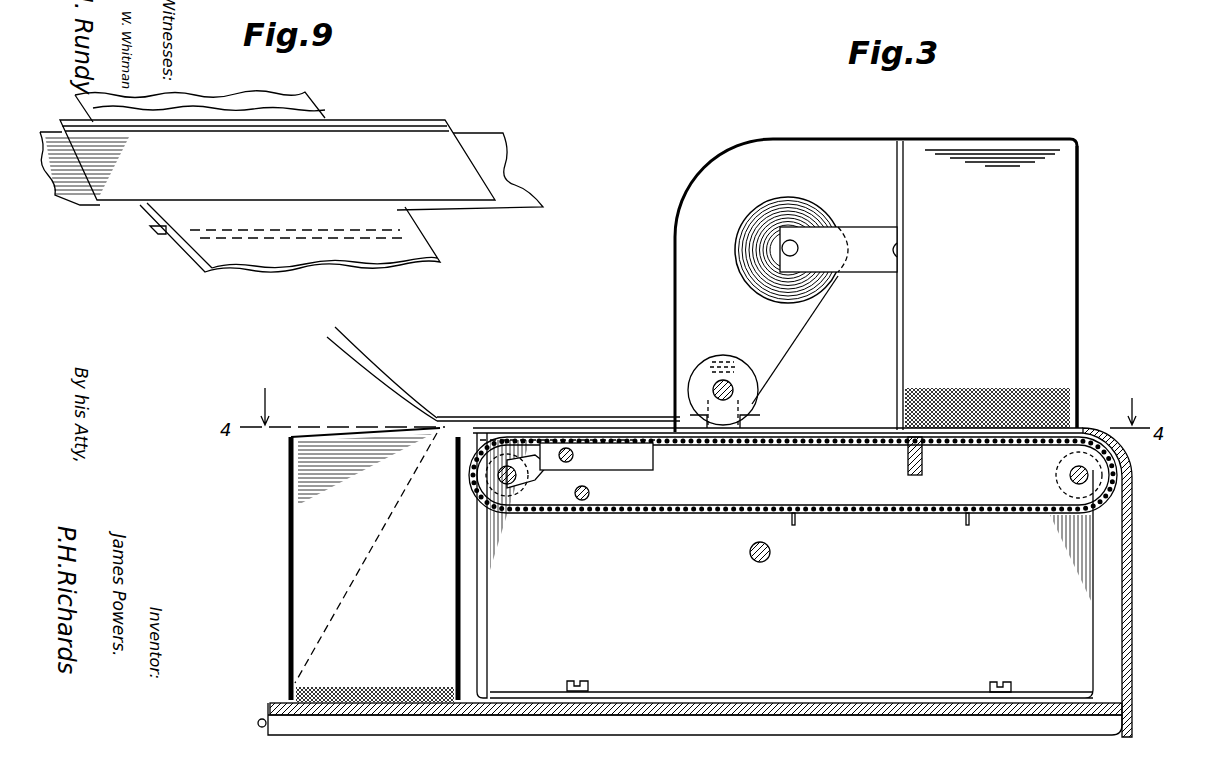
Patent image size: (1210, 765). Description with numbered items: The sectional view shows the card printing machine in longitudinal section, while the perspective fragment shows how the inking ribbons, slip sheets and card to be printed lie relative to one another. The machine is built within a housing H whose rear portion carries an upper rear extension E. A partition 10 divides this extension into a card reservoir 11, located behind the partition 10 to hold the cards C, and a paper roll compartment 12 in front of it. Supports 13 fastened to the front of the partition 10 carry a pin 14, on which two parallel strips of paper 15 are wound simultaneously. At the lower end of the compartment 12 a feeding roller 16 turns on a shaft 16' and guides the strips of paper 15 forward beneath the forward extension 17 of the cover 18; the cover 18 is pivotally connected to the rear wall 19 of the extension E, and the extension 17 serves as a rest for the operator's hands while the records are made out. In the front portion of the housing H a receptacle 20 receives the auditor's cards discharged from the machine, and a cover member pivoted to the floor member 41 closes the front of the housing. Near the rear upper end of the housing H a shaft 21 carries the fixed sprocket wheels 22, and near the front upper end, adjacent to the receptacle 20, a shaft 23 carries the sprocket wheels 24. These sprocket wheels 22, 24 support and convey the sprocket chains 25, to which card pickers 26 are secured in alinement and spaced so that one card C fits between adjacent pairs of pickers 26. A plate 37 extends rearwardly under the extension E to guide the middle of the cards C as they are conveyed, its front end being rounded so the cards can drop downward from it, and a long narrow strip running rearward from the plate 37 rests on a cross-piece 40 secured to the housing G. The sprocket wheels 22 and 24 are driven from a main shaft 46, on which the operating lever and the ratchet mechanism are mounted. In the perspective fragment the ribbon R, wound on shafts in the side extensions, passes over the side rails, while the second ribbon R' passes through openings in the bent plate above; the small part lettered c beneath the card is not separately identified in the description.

In FIG. 3, the partition 10 is at (904, 342).
In FIG. 3, the card reservoir 11 is at (987, 289).
In FIG. 3, the paper roll compartment 12 is at (803, 239).
In FIG. 3, the supports 13 is at (872, 258).
In FIG. 3, the pin 14 is at (783, 256).
In FIG. 9, the strips of paper 15 is at (450, 120).
In FIG. 3, the strips of paper 15 is at (798, 350).
In FIG. 3, the feeding roller 16 is at (729, 381).
In FIG. 3, the shaft 16' is at (761, 396).
In FIG. 3, the forward extension of the cover 17 is at (464, 417).
In FIG. 3, the cover 18 is at (863, 139).
In FIG. 3, the rear wall 19 is at (1078, 220).
In FIG. 3, the receptacle 20 is at (297, 592).
In FIG. 3, the shaft 21 is at (1068, 478).
In FIG. 3, the sprocket wheels 22 is at (1050, 470).
In FIG. 3, the shaft 23 is at (512, 488).
In FIG. 3, the sprocket wheels 24 is at (497, 490).
In FIG. 3, the sprocket chains 25 is at (735, 503).
In FIG. 3, the card pickers 26 is at (790, 525).
In FIG. 3, the plate 37 is at (640, 458).
In FIG. 3, the cross-piece 40 is at (908, 462).
In FIG. 3, the floor member 41 is at (283, 703).
In FIG. 3, the main shaft 46 is at (770, 561).
In FIG. 3, the cards C is at (350, 430).
In FIG. 3, the rear extension E is at (1091, 295).
In FIG. 3, the housing G is at (886, 653).
In FIG. 3, the housing H is at (1141, 632).
In FIG. 9, the ribbon R is at (208, 93).
In FIG. 9, the ribbon R' is at (230, 95).
In FIG. 9, the card stop c is at (152, 233).